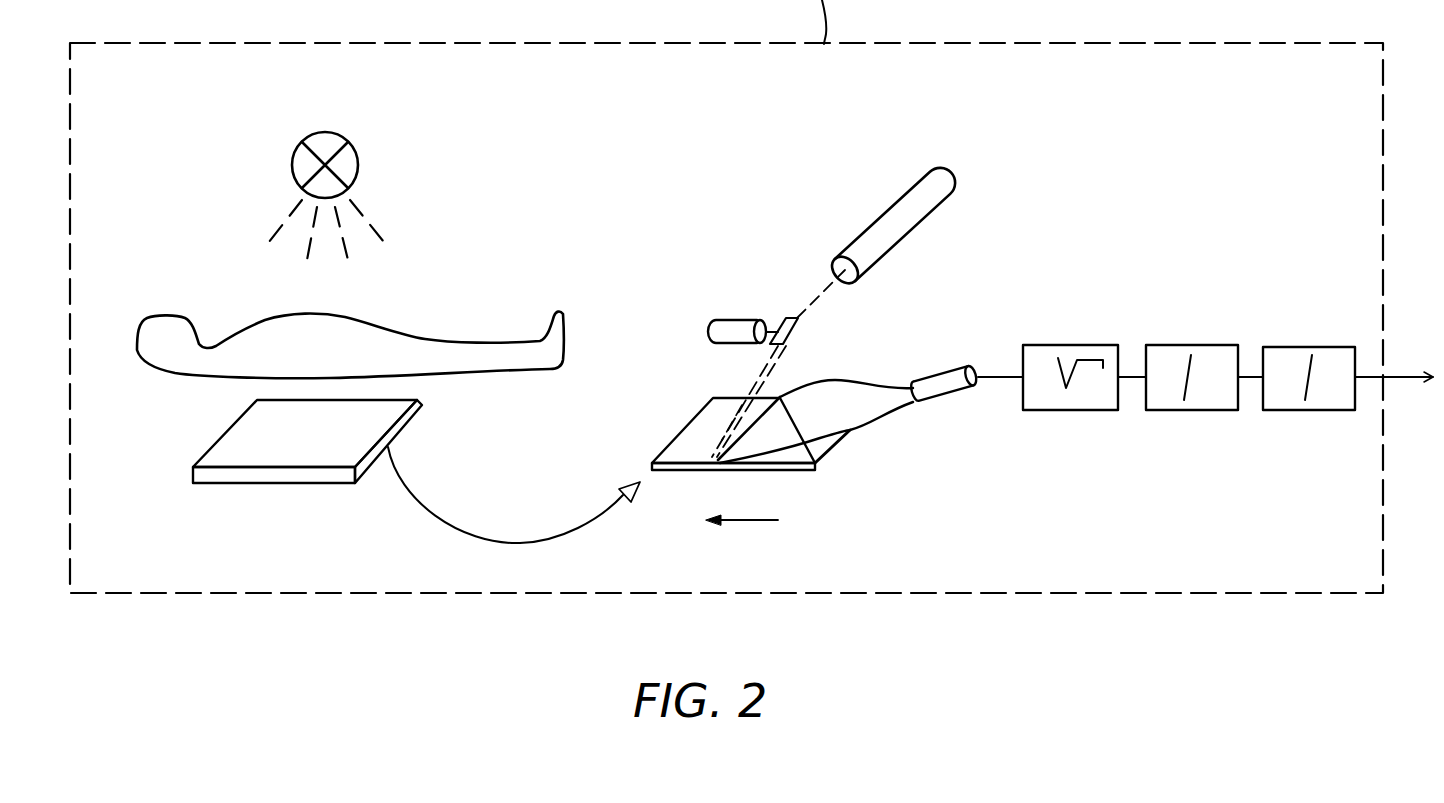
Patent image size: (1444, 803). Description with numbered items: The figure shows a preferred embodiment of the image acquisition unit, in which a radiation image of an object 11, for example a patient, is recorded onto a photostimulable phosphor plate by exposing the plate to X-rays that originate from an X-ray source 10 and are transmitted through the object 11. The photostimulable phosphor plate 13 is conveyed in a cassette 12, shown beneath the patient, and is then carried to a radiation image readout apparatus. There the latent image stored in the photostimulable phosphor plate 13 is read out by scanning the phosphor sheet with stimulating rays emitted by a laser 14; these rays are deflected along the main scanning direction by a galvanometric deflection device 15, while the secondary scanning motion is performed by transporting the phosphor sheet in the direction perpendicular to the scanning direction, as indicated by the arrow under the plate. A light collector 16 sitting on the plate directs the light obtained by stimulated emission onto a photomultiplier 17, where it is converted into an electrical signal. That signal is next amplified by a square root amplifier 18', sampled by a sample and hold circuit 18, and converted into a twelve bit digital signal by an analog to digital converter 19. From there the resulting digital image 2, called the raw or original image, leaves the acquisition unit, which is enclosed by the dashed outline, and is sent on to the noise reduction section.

The digital image 2 is at (1405, 377).
The X-ray source 10 is at (358, 153).
The object 11 is at (427, 338).
The cassette 12 is at (207, 450).
The photostimulable phosphor plate 13 is at (692, 470).
The laser 14 is at (910, 180).
The galvanometric deflection device 15 is at (783, 317).
The light collector 16 is at (857, 385).
The photomultiplier 17 is at (957, 350).
The square root amplifier 18' is at (1084, 345).
The sample and hold circuit 18 is at (1204, 349).
The analog to digital converter 19 is at (1315, 353).